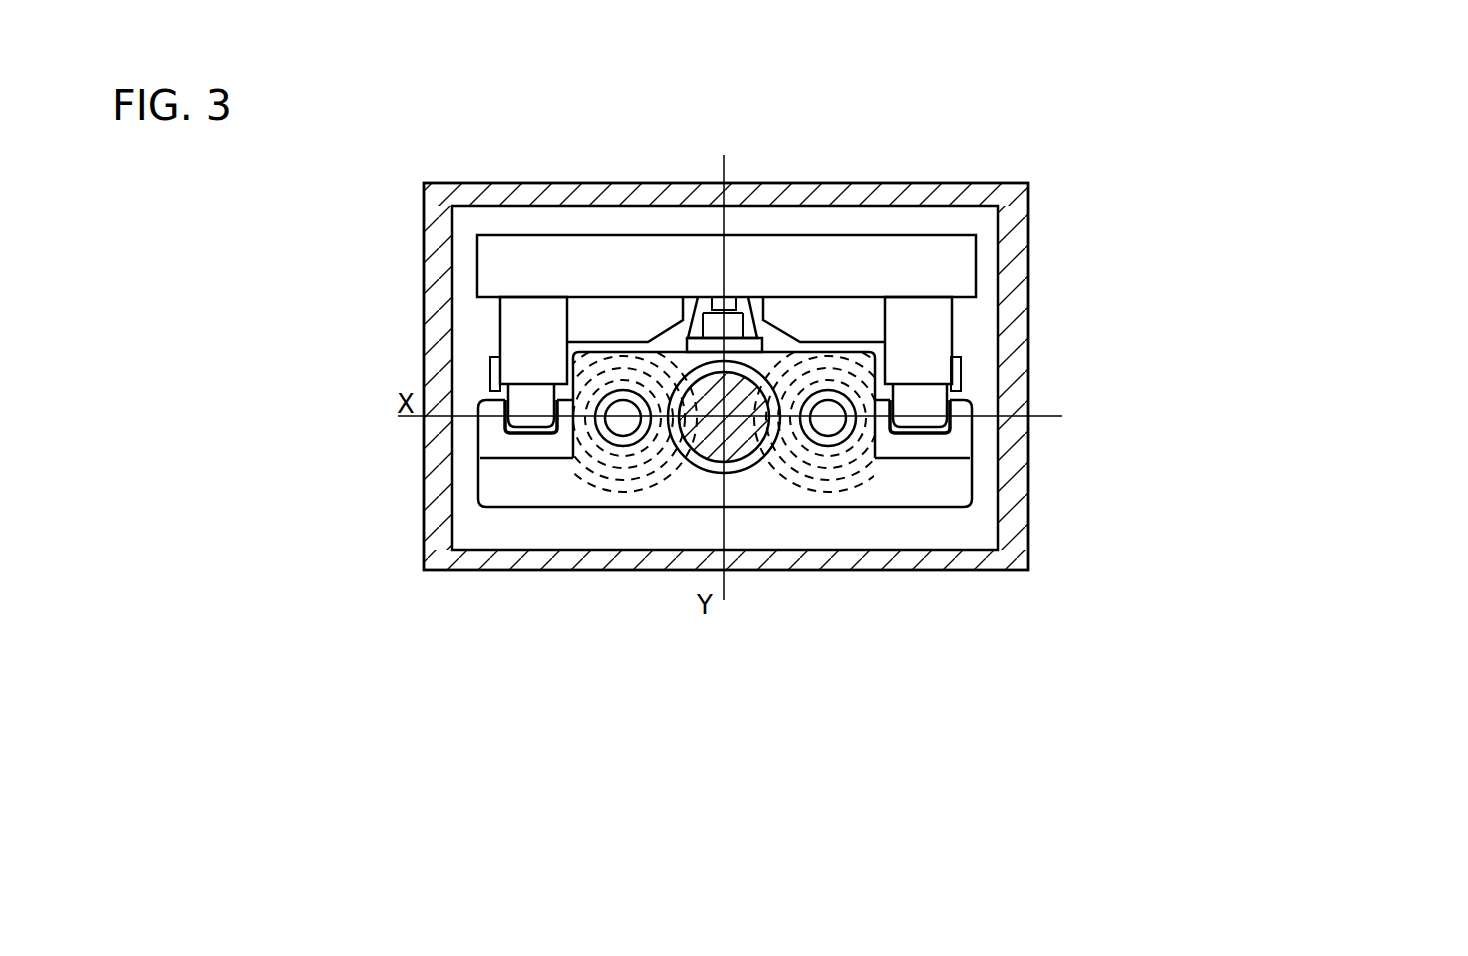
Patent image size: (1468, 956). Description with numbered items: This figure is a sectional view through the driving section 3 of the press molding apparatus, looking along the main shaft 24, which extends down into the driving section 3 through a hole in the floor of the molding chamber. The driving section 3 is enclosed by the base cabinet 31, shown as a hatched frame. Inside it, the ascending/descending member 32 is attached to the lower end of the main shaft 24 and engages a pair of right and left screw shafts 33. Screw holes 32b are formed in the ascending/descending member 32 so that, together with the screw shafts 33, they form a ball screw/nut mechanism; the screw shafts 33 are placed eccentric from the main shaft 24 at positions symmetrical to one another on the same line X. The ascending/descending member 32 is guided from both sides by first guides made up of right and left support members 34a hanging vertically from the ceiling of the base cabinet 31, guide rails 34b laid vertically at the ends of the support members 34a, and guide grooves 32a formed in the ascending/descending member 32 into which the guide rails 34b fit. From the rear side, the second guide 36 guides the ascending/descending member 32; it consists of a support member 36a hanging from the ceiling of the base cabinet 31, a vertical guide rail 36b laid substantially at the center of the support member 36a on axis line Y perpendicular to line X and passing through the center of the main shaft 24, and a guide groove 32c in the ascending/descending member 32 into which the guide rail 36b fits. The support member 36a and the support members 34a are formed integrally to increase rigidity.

The driving section 3 is at (1040, 237).
The main shaft 24 is at (737, 453).
The base cabinet 31 is at (795, 190).
The ascending/descending member 32 is at (523, 447).
The guide groove 32a is at (528, 440).
The screw hole 32b is at (820, 426).
The guide groove 32c is at (738, 294).
The screw shaft 33 is at (623, 430).
The support member 34a is at (517, 312).
The guide rail 34b is at (492, 393).
The second guide 36 is at (578, 224).
The support member 36a is at (857, 268).
The vertical guide rail 36b is at (714, 296).